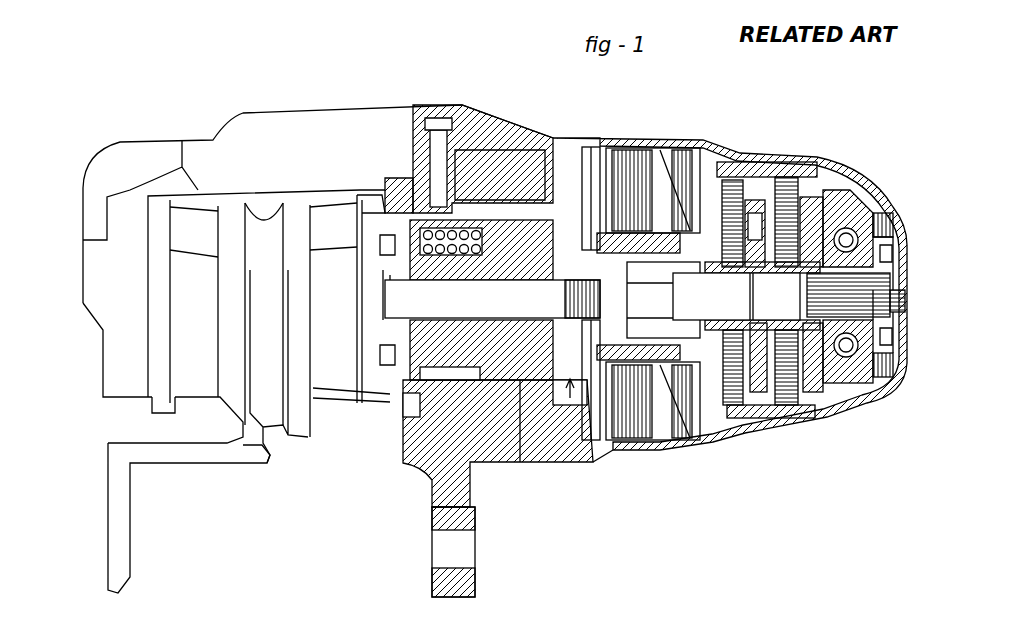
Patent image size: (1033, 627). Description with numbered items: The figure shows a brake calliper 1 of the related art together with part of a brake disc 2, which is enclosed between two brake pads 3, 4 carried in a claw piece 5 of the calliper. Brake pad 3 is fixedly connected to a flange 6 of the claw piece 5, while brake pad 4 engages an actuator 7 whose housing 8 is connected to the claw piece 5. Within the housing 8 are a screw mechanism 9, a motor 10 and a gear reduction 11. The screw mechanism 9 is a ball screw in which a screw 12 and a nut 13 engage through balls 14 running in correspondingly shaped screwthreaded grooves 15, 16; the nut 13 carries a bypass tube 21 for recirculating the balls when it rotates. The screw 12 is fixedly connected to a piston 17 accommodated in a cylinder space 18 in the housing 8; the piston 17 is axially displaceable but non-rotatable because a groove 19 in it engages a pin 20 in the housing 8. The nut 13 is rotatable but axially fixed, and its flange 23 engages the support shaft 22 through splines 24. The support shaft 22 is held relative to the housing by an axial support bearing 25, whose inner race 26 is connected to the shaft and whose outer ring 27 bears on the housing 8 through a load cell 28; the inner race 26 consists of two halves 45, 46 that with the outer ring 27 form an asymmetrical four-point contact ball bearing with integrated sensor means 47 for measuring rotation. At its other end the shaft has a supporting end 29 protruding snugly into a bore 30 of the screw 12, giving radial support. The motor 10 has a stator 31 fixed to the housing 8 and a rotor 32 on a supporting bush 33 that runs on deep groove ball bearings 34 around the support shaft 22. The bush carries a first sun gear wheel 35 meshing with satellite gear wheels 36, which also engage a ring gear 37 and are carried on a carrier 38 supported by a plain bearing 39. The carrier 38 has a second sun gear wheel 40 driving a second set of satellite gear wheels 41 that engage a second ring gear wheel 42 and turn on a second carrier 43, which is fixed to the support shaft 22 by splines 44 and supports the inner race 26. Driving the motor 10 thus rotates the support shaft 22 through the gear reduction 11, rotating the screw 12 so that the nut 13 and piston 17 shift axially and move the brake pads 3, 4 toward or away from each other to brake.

The brake calliper 1 is at (318, 86).
The brake disc 2 is at (238, 478).
The brake pad 3 is at (197, 383).
The brake pad 4 is at (337, 388).
The claw piece 5 is at (262, 128).
The flange 6 is at (118, 253).
The actuator 7 is at (553, 134).
The housing 8 is at (508, 163).
The screw mechanism 9 is at (553, 458).
The motor 10 is at (670, 178).
The gear reduction 11 is at (820, 173).
The screw 12 is at (525, 462).
The nut 13 is at (504, 462).
The balls 14 is at (384, 390).
The screwthreaded groove 15 is at (536, 272).
The screwthreaded groove 16 is at (367, 190).
The piston 17 is at (358, 388).
The cylinder space 18 is at (417, 452).
The groove 19 is at (507, 150).
The pin 20 is at (420, 125).
The bypass tube 21 is at (441, 135).
The support shaft 22 is at (678, 452).
The flange 23 is at (588, 462).
The splines 24 is at (599, 185).
The axial support bearing 25 is at (908, 372).
The inner race 26 is at (907, 235).
The outer ring 27 is at (848, 213).
The load cell 28 is at (868, 228).
The supporting end 29 is at (478, 180).
The bore 30 is at (482, 278).
The stator 31 is at (655, 187).
The rotor 32 is at (640, 165).
The supporting bush 33 is at (624, 455).
The deep groove ball bearings 34 is at (634, 280).
The first sun gear wheel 35 is at (708, 313).
The satellite gear wheels 36 is at (767, 162).
The ring gear 37 is at (742, 162).
The carrier 38 is at (746, 420).
The plain bearing 39 is at (791, 311).
The second sun gear wheel 40 is at (777, 420).
The second set of satellite gear wheels 41 is at (805, 178).
The second ring gear wheel 42 is at (789, 177).
The second carrier 43 is at (828, 190).
The splines 44 is at (811, 418).
The inner ring half 45 is at (834, 418).
The inner ring half 46 is at (861, 410).
The sensor means 47 is at (880, 390).